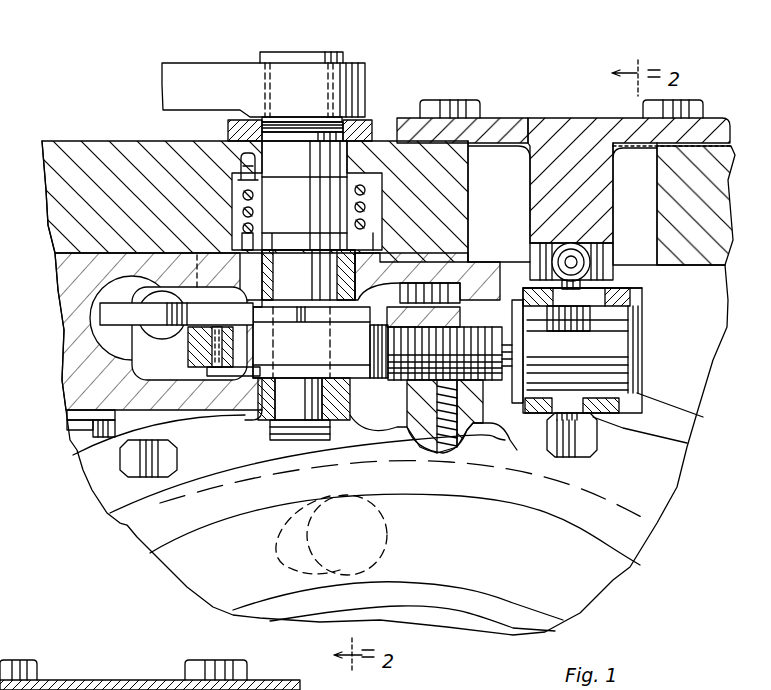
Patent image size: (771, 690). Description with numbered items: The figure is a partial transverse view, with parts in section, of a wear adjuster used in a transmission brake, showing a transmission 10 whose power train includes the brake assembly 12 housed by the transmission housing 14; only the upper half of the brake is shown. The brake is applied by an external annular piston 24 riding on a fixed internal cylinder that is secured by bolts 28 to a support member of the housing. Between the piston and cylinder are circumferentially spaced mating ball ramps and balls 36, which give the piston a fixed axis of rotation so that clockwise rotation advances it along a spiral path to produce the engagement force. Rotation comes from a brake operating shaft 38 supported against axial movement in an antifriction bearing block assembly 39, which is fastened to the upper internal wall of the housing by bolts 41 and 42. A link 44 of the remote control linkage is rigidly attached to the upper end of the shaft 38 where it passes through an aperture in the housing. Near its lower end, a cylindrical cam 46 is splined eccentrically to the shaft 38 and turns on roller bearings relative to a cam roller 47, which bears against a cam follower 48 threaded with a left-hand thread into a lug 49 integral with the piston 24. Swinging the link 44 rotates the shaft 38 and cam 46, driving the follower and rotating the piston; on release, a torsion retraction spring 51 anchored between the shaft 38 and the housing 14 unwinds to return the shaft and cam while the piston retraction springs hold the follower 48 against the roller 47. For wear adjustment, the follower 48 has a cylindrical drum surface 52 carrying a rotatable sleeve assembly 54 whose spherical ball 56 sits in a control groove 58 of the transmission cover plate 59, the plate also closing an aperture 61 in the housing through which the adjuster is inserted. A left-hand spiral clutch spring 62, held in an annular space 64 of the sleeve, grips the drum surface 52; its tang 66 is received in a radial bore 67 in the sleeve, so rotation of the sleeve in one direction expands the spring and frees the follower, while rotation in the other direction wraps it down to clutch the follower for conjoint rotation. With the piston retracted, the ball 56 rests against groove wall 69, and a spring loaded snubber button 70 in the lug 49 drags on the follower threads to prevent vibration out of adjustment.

The transmission 10 is at (49, 128).
The brake assembly 12 is at (657, 343).
The transmission housing 14 is at (105, 148).
The external annular piston 24 is at (640, 493).
The bolts 28 is at (90, 480).
The ball ramps and balls 36 is at (390, 540).
The brake operating shaft 38 is at (305, 430).
The antifriction bearing block assembly 39 is at (240, 414).
The bolt 41 is at (76, 442).
The bolt 42 is at (436, 283).
The link 44 is at (182, 70).
The cylindrical cam 46 is at (200, 412).
The cam roller 47 is at (187, 352).
The cam follower 48 is at (407, 380).
The lug 49 is at (426, 318).
The torsion retraction spring 51 is at (258, 193).
The cylindrical drum surface 52 is at (642, 365).
The sleeve assembly 54 is at (625, 292).
The ball 56 is at (585, 272).
The control groove 58 is at (530, 258).
The transmission cover plate 59 is at (530, 117).
The aperture 61 is at (468, 200).
The spiral clutch spring 62 is at (594, 322).
The annular space 64 is at (630, 305).
The tang 66 is at (518, 330).
The radial bore 67 is at (550, 284).
The groove wall 69 is at (613, 238).
The spring loaded snubber button 70 is at (413, 410).